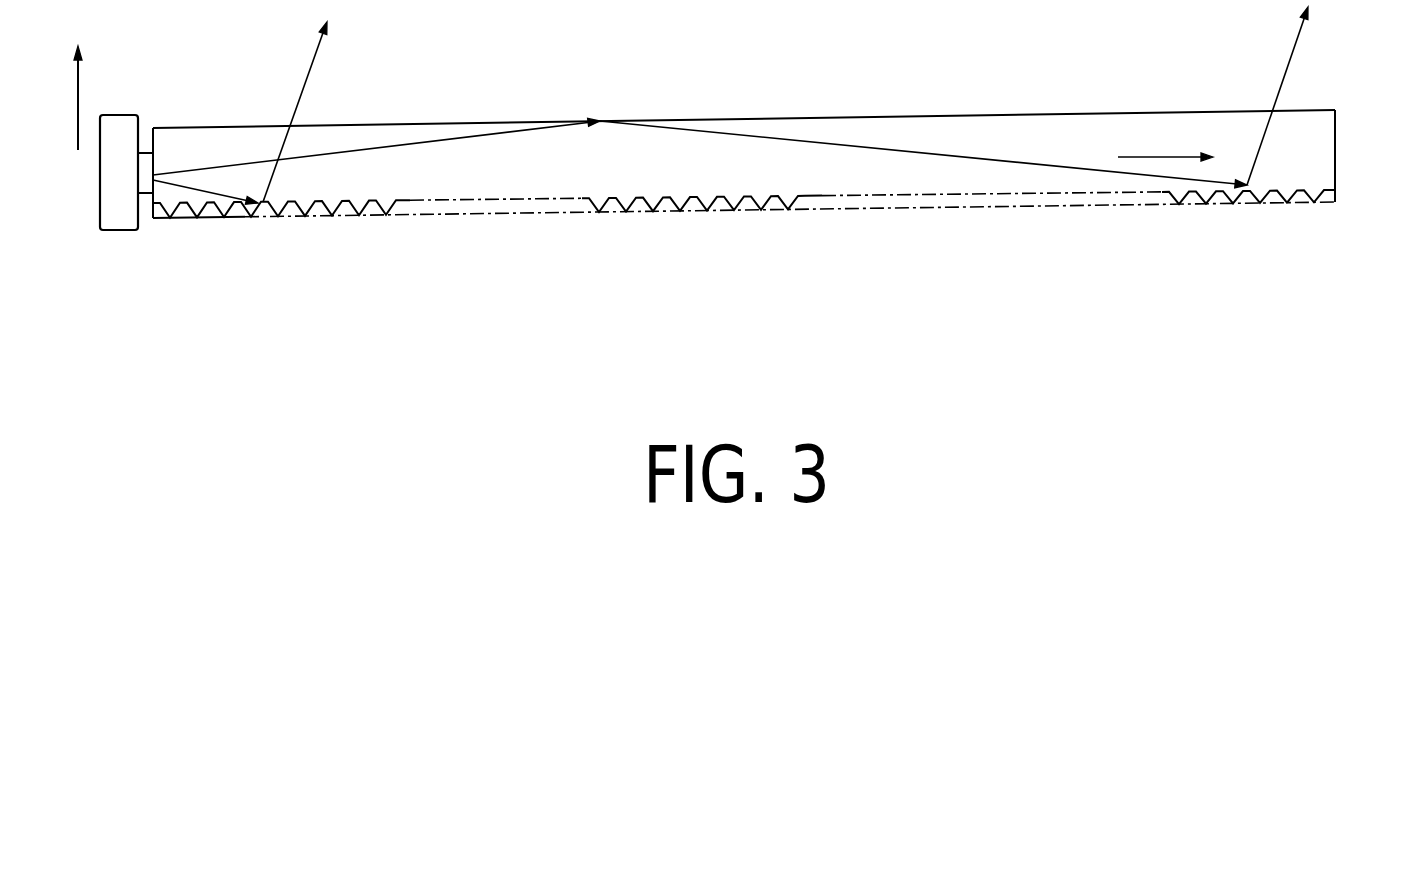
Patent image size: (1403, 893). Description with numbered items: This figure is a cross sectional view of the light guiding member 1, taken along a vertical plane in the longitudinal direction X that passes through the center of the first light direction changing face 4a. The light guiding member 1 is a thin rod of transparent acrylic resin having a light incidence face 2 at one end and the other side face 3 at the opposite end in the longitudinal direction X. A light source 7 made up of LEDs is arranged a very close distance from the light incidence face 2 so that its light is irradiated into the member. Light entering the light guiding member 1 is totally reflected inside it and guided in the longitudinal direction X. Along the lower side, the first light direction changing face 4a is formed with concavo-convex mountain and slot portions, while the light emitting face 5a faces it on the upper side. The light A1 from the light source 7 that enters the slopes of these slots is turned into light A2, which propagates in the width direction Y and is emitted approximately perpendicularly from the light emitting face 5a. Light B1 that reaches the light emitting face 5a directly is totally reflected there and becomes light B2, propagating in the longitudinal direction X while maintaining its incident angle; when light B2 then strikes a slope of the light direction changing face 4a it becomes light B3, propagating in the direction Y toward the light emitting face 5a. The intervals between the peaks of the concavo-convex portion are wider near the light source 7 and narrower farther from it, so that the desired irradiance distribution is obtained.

The light guiding member 1 is at (972, 272).
The light incidence face 2 is at (147, 140).
The other side face 3 is at (1335, 158).
The first light direction changing face 4a is at (680, 211).
The light emitting face 5a is at (217, 127).
The light source 7 is at (120, 232).
The light A1 is at (195, 190).
The light A2 is at (307, 80).
The light B1 is at (422, 143).
The light B2 is at (803, 140).
The light B3 is at (1290, 70).
The longitudinal direction X is at (1177, 157).
The direction of a short side (width) Y is at (77, 82).